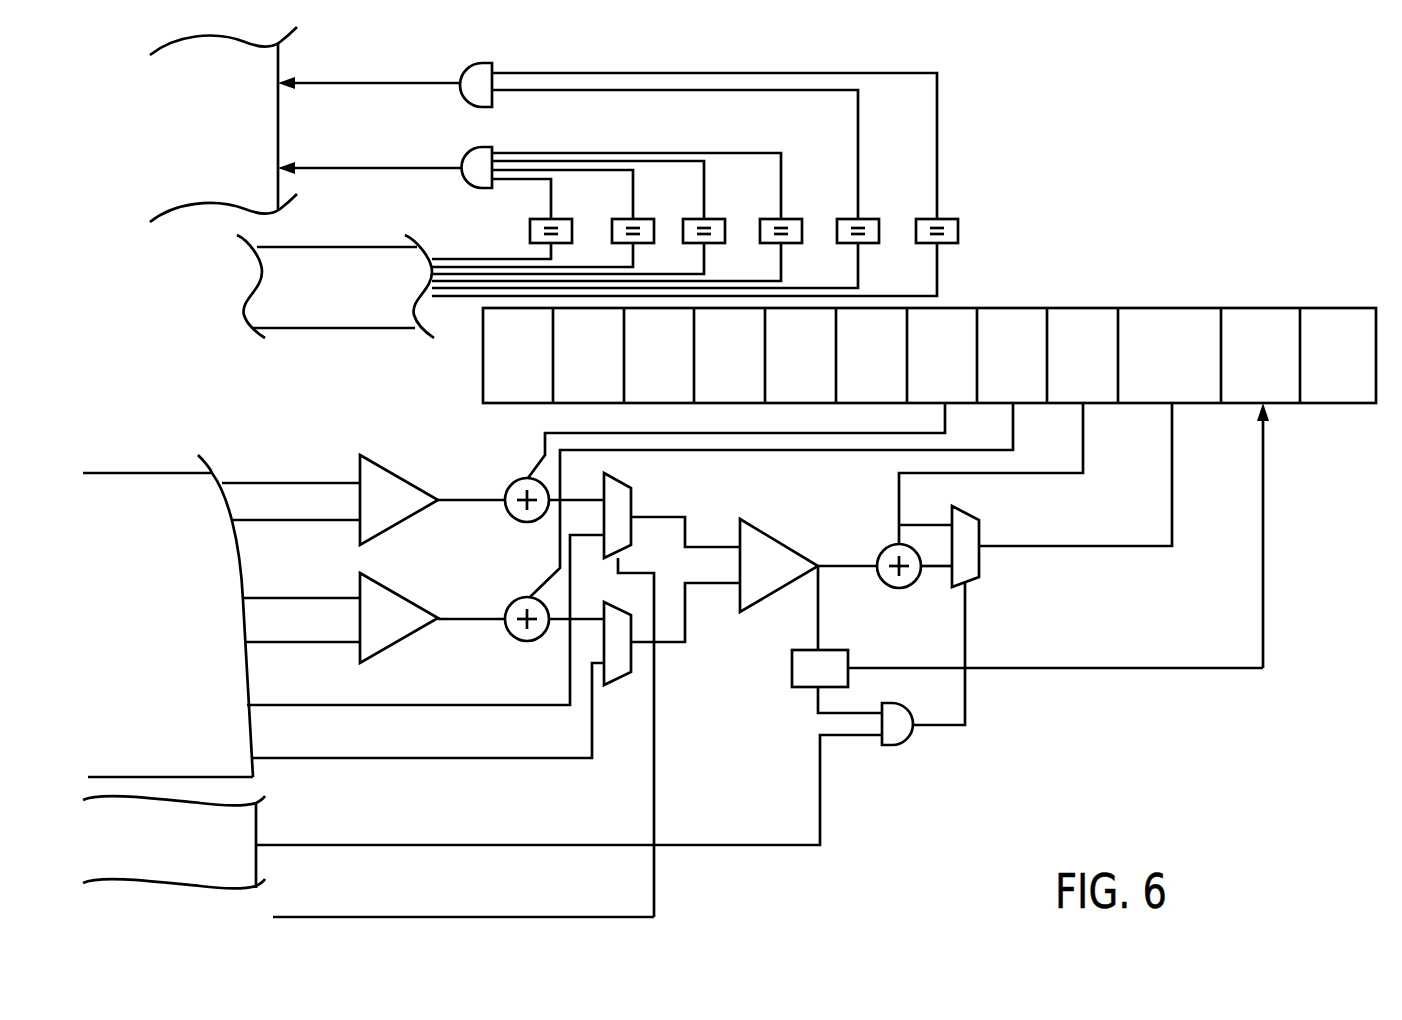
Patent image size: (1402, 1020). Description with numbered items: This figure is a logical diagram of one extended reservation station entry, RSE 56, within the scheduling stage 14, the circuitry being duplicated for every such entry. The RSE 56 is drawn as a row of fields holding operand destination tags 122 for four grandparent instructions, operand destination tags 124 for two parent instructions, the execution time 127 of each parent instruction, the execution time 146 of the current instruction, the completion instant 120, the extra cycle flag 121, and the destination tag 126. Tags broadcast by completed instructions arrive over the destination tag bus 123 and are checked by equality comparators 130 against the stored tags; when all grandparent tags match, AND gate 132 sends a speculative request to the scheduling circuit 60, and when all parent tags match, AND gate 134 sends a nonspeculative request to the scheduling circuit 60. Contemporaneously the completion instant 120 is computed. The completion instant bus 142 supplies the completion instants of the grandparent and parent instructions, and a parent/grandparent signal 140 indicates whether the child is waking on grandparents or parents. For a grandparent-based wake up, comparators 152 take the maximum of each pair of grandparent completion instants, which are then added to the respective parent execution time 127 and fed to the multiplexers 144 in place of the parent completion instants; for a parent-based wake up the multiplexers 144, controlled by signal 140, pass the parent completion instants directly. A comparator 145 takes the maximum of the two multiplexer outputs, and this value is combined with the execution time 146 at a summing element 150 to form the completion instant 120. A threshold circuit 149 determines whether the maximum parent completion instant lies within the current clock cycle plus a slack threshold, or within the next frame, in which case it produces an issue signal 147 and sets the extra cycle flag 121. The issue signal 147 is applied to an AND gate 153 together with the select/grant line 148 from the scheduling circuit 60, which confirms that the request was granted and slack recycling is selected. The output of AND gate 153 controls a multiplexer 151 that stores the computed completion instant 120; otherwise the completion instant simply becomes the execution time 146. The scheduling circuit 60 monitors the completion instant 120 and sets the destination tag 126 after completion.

The scheduling stage 14 is at (1158, 61).
The scheduling circuit 60 is at (230, 133).
The AND gate 134 is at (480, 63).
The AND gate 132 is at (480, 189).
The equality comparators 130 is at (797, 221).
The destination tag bus 123 is at (327, 328).
The RSE entry 56 is at (450, 361).
The operand destination tags 122 is at (510, 403).
The operand destination tags 124 is at (868, 403).
The execution time 127 is at (945, 308).
The execution time 146 is at (1085, 308).
The completion instant 120 is at (1165, 308).
The extra cycle flag 121 is at (1263, 308).
The destination tag 126 is at (1330, 403).
The completion instant bus 142 is at (123, 473).
The comparators 152 is at (398, 528).
The multiplexers 144 is at (619, 474).
The comparator 145 is at (780, 538).
The adder 150 is at (899, 588).
The multiplexer 151 is at (963, 508).
The threshold circuit 149 is at (792, 669).
The issue signal 147 is at (826, 714).
The AND gate 153 is at (890, 745).
The select/grant line 148 is at (528, 845).
The parent/grandparent signal 140 is at (530, 917).